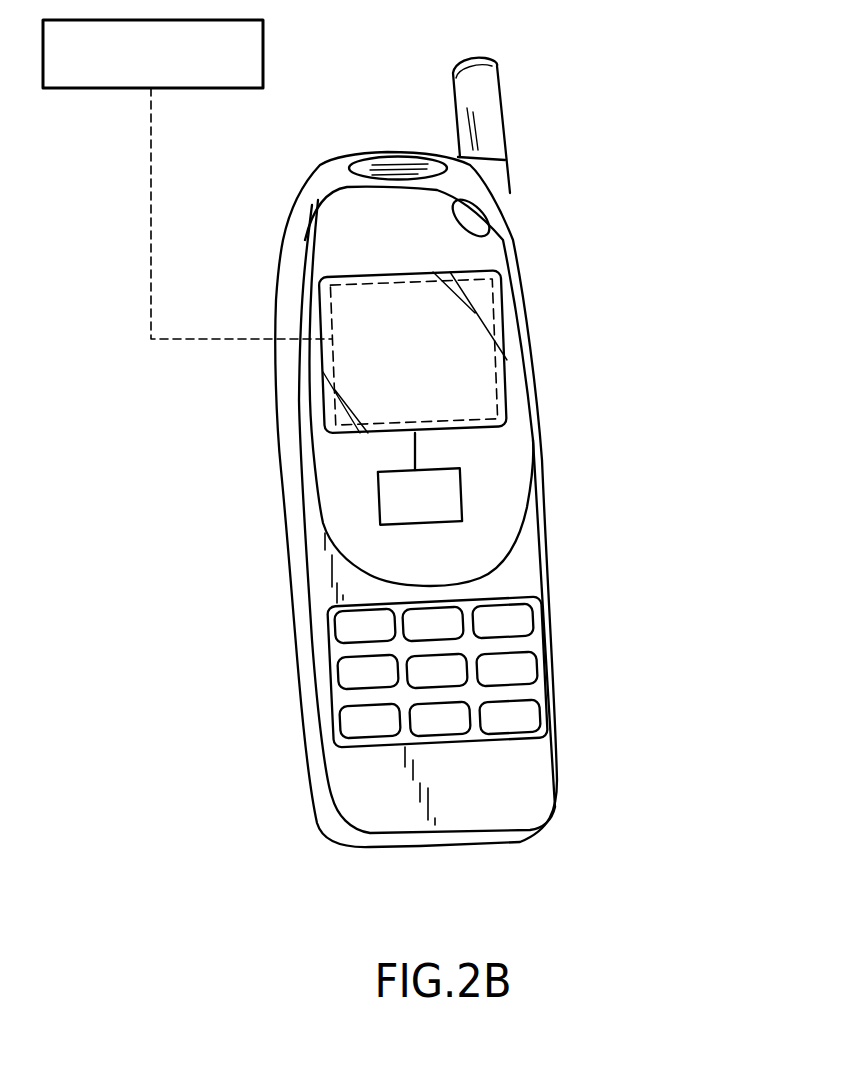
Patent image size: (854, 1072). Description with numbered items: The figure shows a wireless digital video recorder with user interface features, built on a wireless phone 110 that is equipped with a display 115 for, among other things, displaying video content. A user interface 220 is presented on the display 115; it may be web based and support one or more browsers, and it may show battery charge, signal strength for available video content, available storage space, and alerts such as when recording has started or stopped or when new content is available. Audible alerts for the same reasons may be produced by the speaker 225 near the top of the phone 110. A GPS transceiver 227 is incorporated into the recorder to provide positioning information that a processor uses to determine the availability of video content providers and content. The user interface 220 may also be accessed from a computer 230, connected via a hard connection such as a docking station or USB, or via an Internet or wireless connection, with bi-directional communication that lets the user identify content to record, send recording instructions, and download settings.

The wireless phone 110 is at (513, 222).
The display 115 is at (505, 275).
The user interface 220 is at (333, 362).
The speaker 225 is at (387, 157).
The GPS transceiver 227 is at (377, 495).
The computer 230 is at (263, 40).